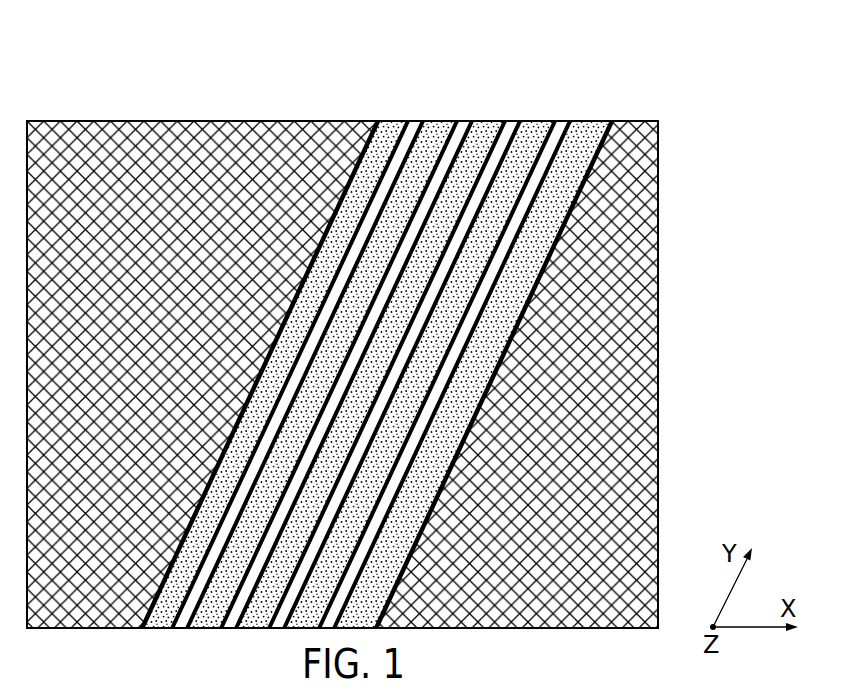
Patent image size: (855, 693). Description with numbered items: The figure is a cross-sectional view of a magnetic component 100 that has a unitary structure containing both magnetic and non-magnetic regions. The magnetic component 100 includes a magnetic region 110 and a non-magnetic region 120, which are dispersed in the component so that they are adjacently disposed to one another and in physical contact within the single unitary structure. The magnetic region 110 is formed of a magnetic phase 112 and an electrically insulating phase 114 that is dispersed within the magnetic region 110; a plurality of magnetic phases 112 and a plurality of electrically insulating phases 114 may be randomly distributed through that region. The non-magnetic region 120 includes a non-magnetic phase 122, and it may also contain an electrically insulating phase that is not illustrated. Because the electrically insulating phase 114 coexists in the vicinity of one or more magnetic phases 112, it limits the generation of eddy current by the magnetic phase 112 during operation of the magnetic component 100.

The magnetic component 100 is at (617, 52).
The magnetic region 110 is at (458, 110).
The magnetic phase 112 is at (393, 120).
The electrically insulating phase 114 is at (560, 120).
The non-magnetic region 120 is at (143, 110).
The non-magnetic phase 122 is at (659, 212).